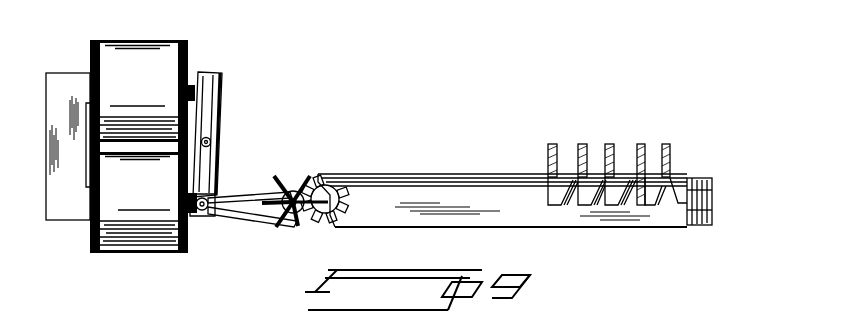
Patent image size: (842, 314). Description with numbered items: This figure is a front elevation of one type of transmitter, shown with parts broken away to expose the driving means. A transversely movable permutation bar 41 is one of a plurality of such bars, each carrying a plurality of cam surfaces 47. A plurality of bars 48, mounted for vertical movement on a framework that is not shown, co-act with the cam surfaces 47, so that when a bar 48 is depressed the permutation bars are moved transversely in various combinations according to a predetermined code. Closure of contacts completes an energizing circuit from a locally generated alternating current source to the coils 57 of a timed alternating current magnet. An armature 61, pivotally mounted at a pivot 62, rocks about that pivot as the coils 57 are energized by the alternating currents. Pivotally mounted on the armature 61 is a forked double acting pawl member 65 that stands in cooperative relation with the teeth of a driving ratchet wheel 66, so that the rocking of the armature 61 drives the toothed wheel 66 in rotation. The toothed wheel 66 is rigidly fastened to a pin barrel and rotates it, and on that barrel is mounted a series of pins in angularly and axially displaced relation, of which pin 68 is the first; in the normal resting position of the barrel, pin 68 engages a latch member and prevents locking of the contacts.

The permutation bar 41 is at (420, 203).
The cam surfaces 47 is at (664, 172).
The bars 48 is at (610, 144).
The coils 57 is at (118, 177).
The armature 61 is at (221, 100).
The pivot 62 is at (211, 142).
The forked double acting pawl member 65 is at (252, 196).
The driving ratchet wheel 66 is at (298, 186).
The pin 68 is at (332, 200).